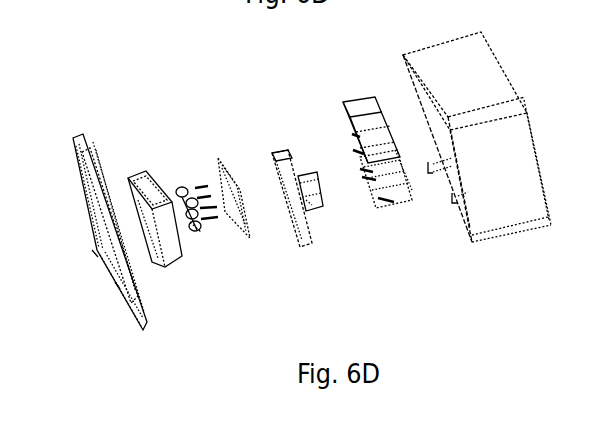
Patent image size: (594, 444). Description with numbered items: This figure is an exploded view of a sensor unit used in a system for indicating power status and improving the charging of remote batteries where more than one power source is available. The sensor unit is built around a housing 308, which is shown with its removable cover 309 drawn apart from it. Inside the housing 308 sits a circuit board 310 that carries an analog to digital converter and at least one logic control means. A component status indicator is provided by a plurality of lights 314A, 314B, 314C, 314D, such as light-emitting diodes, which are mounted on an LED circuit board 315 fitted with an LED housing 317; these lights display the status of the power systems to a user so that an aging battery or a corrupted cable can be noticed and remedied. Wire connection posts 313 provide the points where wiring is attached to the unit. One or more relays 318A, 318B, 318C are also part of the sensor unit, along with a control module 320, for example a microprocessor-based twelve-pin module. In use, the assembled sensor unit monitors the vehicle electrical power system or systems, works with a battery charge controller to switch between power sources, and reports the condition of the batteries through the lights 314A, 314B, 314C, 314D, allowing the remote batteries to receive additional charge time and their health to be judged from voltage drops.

The housing 308 is at (507, 222).
The removable cover 309 is at (143, 330).
The circuit board 310 is at (402, 188).
The wire connection posts 313 is at (370, 185).
The light 314A is at (183, 189).
The light 314B is at (193, 189).
The light 314C is at (213, 208).
The light 314D is at (195, 229).
The LED circuit board 315 is at (247, 238).
The LED housing 317 is at (144, 170).
The relay 318A is at (353, 100).
The relay 318B is at (362, 98).
The relay 318C is at (370, 123).
The control module 320 is at (305, 245).